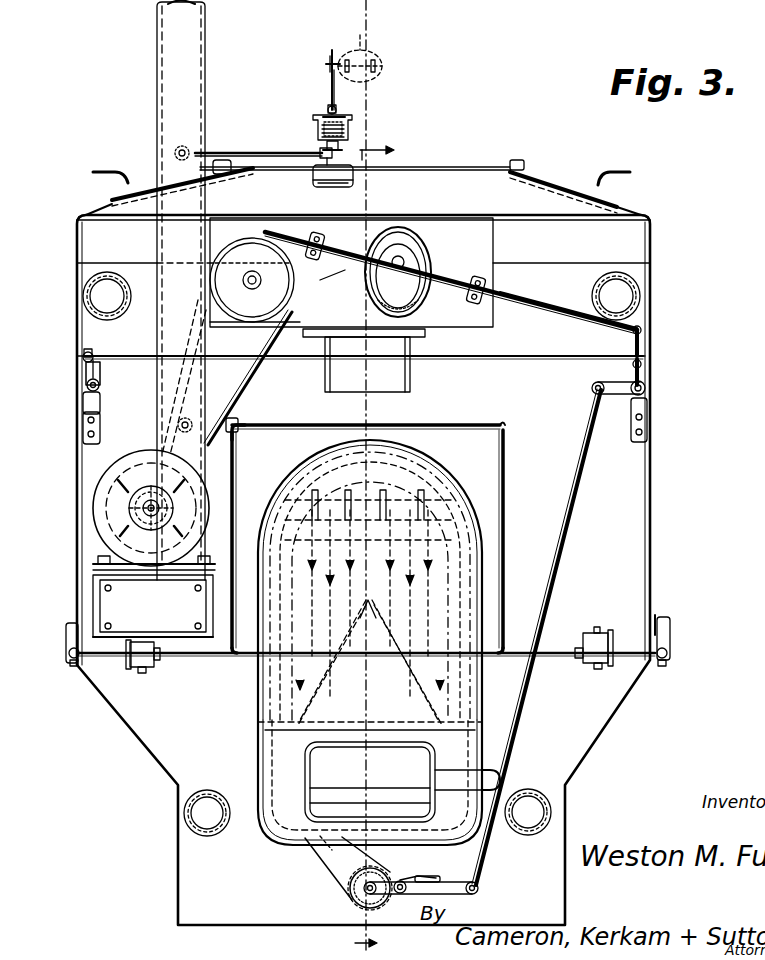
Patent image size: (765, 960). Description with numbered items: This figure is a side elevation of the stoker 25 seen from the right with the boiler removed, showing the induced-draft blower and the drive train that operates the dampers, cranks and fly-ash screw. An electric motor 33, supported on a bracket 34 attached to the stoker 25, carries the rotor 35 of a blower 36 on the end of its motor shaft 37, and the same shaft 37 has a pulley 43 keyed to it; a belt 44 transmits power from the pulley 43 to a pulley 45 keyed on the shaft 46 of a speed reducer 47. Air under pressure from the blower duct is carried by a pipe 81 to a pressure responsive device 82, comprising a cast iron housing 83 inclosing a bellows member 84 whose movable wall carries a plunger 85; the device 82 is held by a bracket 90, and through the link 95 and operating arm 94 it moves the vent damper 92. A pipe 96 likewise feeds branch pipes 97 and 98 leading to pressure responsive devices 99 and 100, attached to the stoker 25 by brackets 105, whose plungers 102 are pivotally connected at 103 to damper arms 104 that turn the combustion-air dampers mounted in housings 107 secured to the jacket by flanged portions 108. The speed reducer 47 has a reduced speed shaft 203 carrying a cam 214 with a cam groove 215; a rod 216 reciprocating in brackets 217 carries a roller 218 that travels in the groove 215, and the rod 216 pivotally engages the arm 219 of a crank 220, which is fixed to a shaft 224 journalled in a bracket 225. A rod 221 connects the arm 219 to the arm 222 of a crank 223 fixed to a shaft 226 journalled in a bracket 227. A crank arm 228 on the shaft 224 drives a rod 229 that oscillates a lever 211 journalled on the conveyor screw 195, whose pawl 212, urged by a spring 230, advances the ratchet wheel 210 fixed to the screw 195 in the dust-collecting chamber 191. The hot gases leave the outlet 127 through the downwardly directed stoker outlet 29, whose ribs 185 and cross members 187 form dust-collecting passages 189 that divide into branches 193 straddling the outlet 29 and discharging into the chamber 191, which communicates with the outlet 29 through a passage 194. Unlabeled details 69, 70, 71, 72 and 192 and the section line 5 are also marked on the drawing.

The section line 5 is at (375, 548).
The stoker 25 is at (652, 478).
The stoker outlet 29 is at (320, 818).
The electric motor 33 is at (100, 552).
The bracket 34 is at (155, 628).
The rotor 35 is at (151, 519).
The blower 36 is at (165, 405).
The motor shaft 37 is at (151, 508).
The pulley 43 is at (170, 510).
The belt 44 is at (252, 372).
The pulley 45 is at (285, 300).
The shaft 46 is at (256, 280).
The speed reducer 47 is at (282, 225).
The corner plate 69 is at (112, 207).
The spring bar 70 is at (140, 185).
The clamp 71 is at (220, 158).
The handle 72 is at (105, 170).
The pipe 81 is at (266, 152).
The pressure responsive device 82 is at (352, 125).
The housing 83 is at (340, 145).
The bellows member 84 is at (340, 116).
The plunger 85 is at (328, 110).
The bracket 90 is at (353, 176).
The damper 92 is at (360, 48).
The operating arm 94 is at (330, 54).
The link 95 is at (332, 86).
The pipe 96 is at (226, 432).
The branch pipe 97 is at (305, 425).
The branch pipe 98 is at (236, 490).
The pressure responsive device 99 is at (590, 640).
The pressure responsive device 100 is at (150, 665).
The plunger 102 is at (96, 660).
The pivot connection 103 is at (72, 662).
The damper arm 104 is at (68, 645).
The bracket 105 is at (142, 674).
The housing 107 is at (68, 628).
The flanged portion 108 is at (658, 615).
The outlet 127 is at (402, 478).
The rib 185 is at (370, 595).
The cross member 187 is at (440, 520).
The dust-collecting passage 189 is at (440, 580).
The dust-collecting chamber 191 is at (345, 858).
The deflector 192 is at (370, 662).
The branch 193 is at (262, 718).
The passage 194 is at (500, 780).
The conveyor screw 195 is at (364, 888).
The reduced speed shaft 203 is at (405, 262).
The ratchet wheel 210 is at (352, 905).
The lever 211 is at (458, 893).
The pawl 212 is at (400, 880).
The cam 214 is at (420, 240).
The cam groove 215 is at (418, 300).
The rod 216 is at (525, 300).
The bracket 217 is at (318, 260).
The roller 218 is at (365, 272).
The arm 219 is at (640, 344).
The crank 220 is at (642, 378).
The rod 221 is at (525, 360).
The arm 222 is at (95, 375).
The crank 223 is at (86, 385).
The shaft 224 is at (646, 390).
The bracket 225 is at (645, 420).
The shaft 226 is at (83, 400).
The bracket 227 is at (83, 432).
The crank arm 228 is at (608, 381).
The rod 229 is at (568, 515).
The spring 230 is at (425, 876).